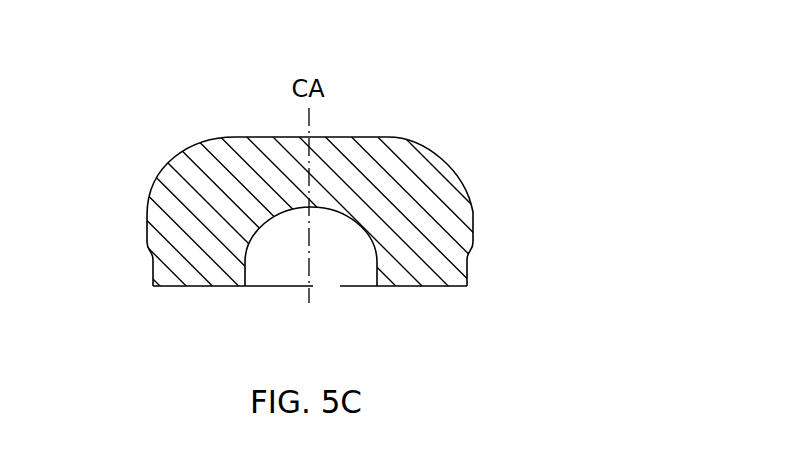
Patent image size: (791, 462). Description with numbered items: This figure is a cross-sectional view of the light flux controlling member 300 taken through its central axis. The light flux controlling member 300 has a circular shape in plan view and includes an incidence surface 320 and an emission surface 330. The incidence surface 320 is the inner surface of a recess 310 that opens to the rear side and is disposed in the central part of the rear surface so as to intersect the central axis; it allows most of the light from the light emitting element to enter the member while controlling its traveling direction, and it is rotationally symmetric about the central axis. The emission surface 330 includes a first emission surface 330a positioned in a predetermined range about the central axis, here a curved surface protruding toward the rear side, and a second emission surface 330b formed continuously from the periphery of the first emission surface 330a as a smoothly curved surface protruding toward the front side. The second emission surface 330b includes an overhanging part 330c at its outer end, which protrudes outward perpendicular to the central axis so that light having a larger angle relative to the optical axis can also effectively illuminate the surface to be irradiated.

The light flux controlling member 300 is at (470, 102).
The recess 310 is at (349, 303).
The incidence surface 320 is at (251, 242).
The emission surface 330 is at (233, 68).
The first emission surface 330a is at (300, 137).
The second emission surface 330b is at (166, 166).
The overhanging part 330c is at (476, 202).